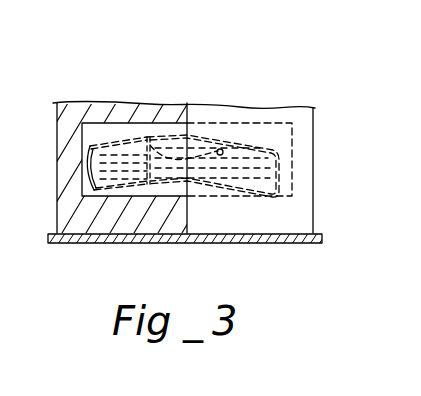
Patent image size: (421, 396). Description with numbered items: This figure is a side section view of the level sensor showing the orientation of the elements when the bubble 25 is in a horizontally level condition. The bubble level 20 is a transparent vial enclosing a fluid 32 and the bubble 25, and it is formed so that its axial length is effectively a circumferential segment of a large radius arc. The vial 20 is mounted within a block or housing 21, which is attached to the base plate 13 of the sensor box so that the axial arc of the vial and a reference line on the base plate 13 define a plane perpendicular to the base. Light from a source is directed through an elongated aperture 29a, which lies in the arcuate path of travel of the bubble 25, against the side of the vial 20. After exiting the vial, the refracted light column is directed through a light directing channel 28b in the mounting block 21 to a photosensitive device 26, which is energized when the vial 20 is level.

The base plate 13 is at (273, 243).
The bubble level 20 is at (97, 163).
The housing 21 is at (305, 178).
The bubble 25 is at (170, 150).
The photosensitive device 26 is at (150, 196).
The light directing channel 28b is at (146, 137).
The elongated aperture 29a is at (221, 149).
The fluid 32 is at (118, 148).